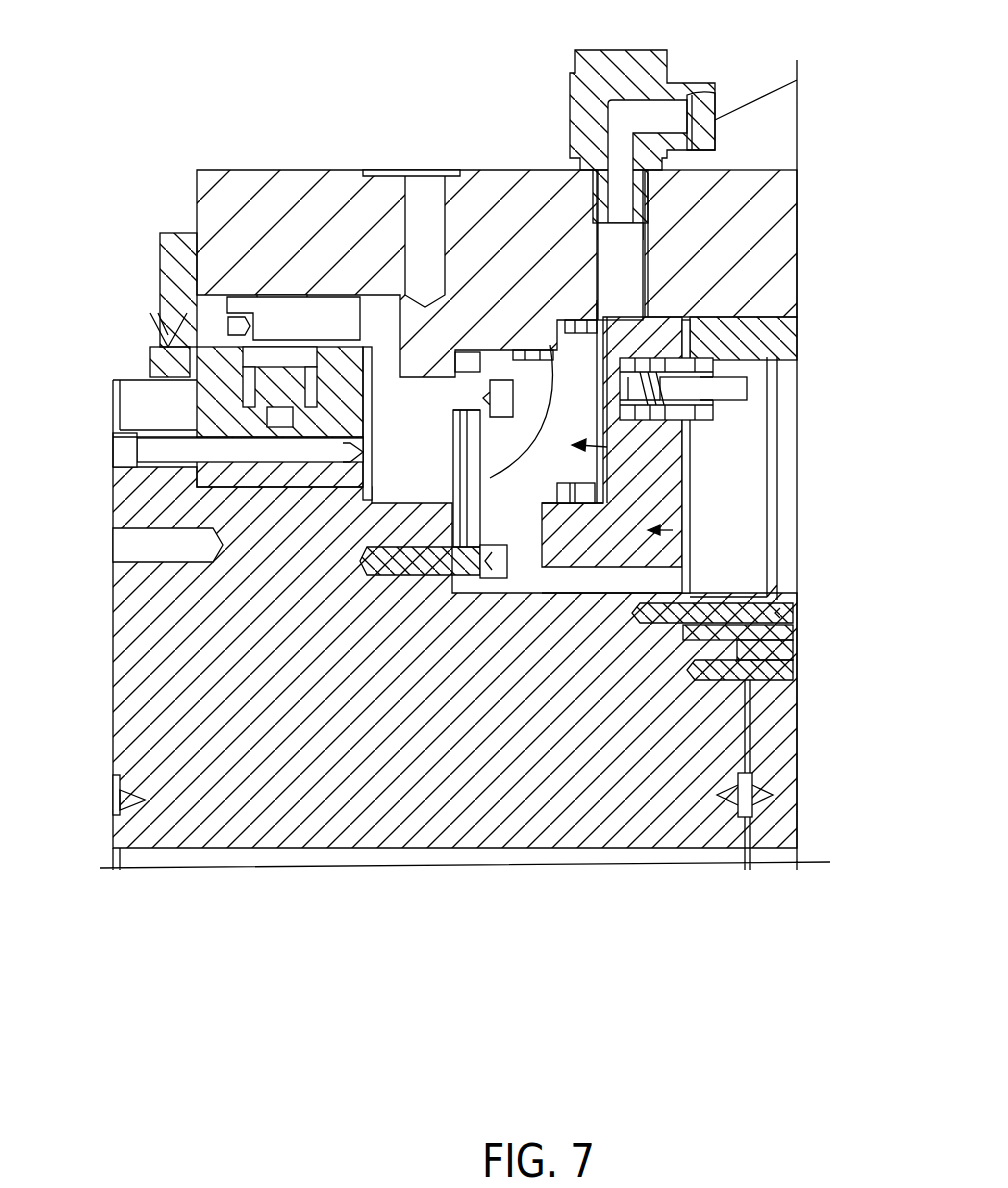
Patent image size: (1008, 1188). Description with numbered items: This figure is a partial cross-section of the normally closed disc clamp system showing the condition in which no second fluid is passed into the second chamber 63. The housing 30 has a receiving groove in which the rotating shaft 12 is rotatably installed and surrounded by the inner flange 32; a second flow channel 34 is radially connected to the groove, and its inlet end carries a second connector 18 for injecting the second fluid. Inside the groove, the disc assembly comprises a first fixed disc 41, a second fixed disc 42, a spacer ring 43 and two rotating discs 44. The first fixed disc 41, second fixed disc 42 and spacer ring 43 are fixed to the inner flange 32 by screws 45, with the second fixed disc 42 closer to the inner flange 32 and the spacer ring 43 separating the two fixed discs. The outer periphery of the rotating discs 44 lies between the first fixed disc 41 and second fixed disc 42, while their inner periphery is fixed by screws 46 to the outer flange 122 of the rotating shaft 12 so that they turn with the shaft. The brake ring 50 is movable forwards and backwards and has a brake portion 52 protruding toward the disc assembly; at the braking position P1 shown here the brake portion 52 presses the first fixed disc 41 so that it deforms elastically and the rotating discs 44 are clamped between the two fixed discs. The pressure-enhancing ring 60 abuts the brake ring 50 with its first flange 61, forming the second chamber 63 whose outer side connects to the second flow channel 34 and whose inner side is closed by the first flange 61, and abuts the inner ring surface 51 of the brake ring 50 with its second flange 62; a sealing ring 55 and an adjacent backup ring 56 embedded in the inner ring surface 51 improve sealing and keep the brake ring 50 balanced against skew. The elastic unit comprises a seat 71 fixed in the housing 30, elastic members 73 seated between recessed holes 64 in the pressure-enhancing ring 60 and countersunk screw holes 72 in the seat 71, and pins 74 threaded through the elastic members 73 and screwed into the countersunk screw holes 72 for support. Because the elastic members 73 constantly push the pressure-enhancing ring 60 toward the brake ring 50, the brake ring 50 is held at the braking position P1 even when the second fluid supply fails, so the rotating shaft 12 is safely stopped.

The rotating shaft 12 is at (155, 662).
The second connector 18 is at (590, 90).
The housing 30 is at (225, 195).
The inner flange 32 is at (405, 505).
The second flow channel 34 is at (605, 243).
The first fixed disc 41 is at (460, 380).
The second fixed disc 42 is at (410, 350).
The spacer ring 43 is at (448, 340).
The rotating discs 44 is at (455, 490).
The screws 45 is at (298, 335).
The screws 46 is at (213, 545).
The brake ring 50 is at (603, 480).
The inner ring surface 51 is at (557, 503).
The brake portion 52 is at (512, 330).
The sealing ring 55 is at (565, 503).
The backup ring 56 is at (578, 503).
The pressure-enhancing ring 60 is at (775, 560).
The first flange 61 is at (690, 535).
The second flange 62 is at (547, 540).
The second chamber 63 is at (622, 322).
The recessed holes 64 is at (603, 447).
The seat 71 is at (745, 320).
The countersunk screw holes 72 is at (725, 405).
The elastic members 73 is at (647, 417).
The pins 74 is at (735, 385).
The outer flange 122 is at (425, 570).
The braking position P1 is at (498, 345).